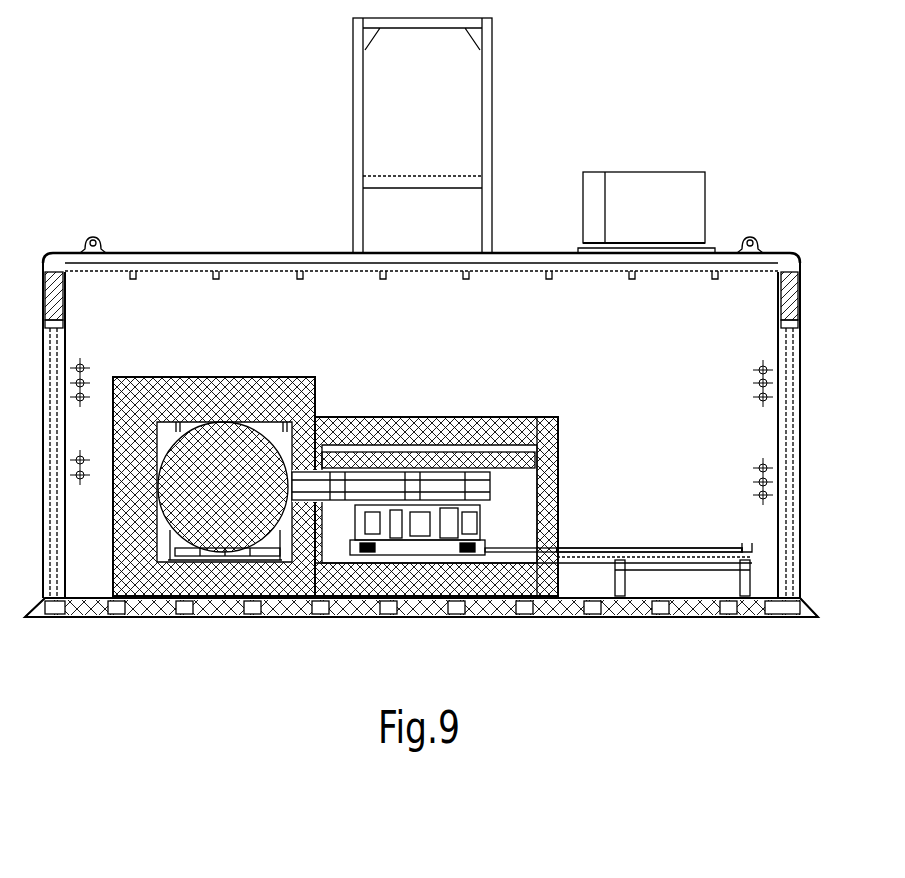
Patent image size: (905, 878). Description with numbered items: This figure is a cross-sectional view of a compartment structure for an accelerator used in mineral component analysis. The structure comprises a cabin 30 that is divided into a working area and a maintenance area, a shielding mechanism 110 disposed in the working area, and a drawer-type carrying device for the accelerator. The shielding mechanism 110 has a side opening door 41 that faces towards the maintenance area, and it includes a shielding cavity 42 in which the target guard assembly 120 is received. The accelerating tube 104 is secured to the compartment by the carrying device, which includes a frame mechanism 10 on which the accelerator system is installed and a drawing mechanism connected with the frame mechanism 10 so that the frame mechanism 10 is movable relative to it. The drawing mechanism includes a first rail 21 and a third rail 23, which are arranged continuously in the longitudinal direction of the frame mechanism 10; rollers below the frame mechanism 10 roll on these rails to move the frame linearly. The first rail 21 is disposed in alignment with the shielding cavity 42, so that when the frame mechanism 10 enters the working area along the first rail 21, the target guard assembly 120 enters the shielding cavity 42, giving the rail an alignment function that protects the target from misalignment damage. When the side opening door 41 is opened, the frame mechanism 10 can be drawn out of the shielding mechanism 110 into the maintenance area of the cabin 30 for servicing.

The cabin 30 is at (210, 253).
The frame mechanism 10 is at (340, 606).
The shielding cavity 42 is at (183, 430).
The target guard assembly 120 is at (247, 397).
The shielding mechanism 110 is at (408, 413).
The accelerating tube 104 is at (364, 487).
The side opening door 41 is at (558, 503).
The first rail 21 is at (322, 597).
The third rail 23 is at (680, 558).